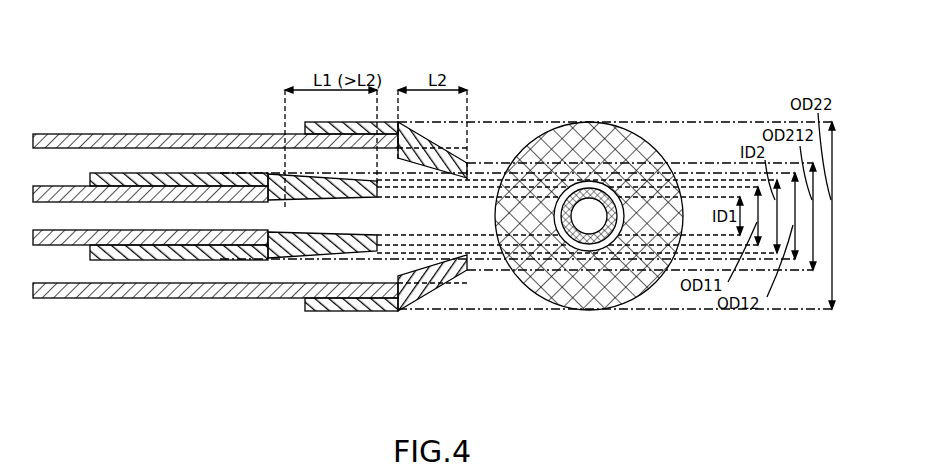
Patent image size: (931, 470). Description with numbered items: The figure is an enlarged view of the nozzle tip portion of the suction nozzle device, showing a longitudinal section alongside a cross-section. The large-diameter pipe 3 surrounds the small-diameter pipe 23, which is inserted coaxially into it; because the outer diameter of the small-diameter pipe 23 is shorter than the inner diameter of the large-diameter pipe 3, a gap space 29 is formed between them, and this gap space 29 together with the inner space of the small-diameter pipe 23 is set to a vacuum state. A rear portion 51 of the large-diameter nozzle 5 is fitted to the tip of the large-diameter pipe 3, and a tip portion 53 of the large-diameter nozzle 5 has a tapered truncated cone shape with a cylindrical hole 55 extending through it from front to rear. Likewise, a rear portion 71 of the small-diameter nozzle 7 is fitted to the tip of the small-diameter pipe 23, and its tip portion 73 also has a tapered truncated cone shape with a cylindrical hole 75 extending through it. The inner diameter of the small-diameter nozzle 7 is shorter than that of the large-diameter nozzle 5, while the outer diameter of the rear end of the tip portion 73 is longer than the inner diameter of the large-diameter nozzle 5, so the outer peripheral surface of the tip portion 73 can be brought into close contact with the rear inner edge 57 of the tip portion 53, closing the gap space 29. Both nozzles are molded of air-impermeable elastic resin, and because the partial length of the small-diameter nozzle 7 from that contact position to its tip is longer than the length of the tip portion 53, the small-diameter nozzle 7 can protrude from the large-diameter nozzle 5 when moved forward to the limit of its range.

The large-diameter pipe 3 is at (238, 133).
The large-diameter nozzle 5 is at (474, 197).
The small-diameter nozzle 7 is at (301, 270).
The small-diameter pipe 23 is at (80, 243).
The gap space 29 is at (91, 165).
The rear portion of the large-diameter nozzle 51 is at (313, 125).
The tip portion of the large-diameter nozzle 53 is at (460, 160).
The cylindrical hole 55 is at (458, 215).
The rear inner edge 57 is at (396, 150).
The rear portion of the small-diameter nozzle 71 is at (158, 260).
The tip portion of the small-diameter nozzle 73 is at (308, 250).
The cylindrical hole 75 is at (350, 222).